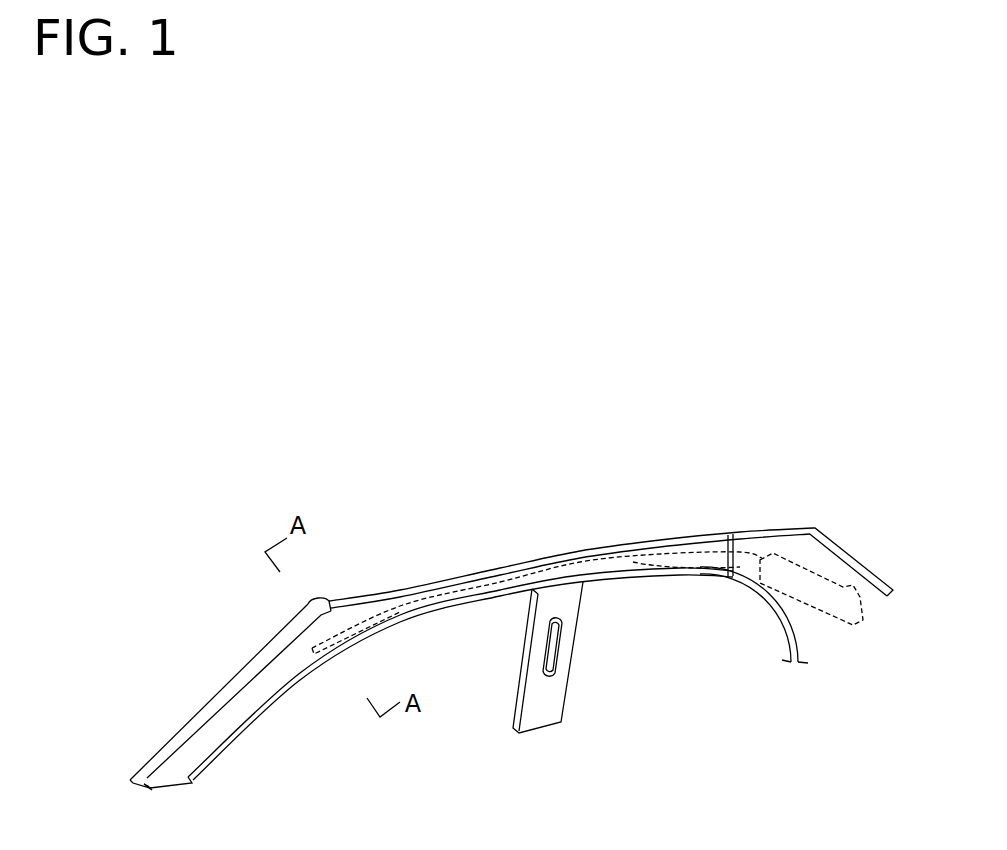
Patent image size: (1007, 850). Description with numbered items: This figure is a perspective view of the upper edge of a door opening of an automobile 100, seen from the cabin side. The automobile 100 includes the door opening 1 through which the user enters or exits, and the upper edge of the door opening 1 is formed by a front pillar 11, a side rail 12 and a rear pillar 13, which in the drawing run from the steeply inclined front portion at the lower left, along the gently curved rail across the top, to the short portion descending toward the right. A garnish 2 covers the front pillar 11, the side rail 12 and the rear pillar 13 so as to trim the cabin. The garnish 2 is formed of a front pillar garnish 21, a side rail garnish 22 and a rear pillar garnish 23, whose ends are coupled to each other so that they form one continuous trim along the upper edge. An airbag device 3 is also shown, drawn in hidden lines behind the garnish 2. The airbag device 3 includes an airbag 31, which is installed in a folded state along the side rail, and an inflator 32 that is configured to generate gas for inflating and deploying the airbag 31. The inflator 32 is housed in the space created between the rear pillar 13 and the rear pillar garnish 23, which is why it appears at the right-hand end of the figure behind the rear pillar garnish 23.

The door opening 1 is at (526, 652).
The front pillar 11 is at (230, 677).
The side rail 12 is at (545, 553).
The rear pillar 13 is at (827, 563).
The garnish 2 is at (548, 624).
The front pillar garnish 21 is at (245, 716).
The side rail garnish 22 is at (490, 574).
The rear pillar garnish 23 is at (887, 583).
The airbag device 3 is at (587, 628).
The airbag 31 is at (633, 561).
The inflator 32 is at (760, 583).
The automobile 100 is at (794, 700).